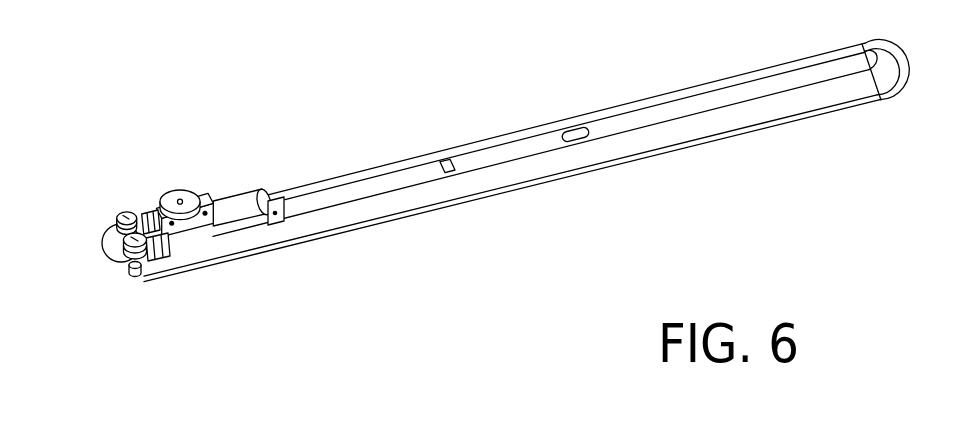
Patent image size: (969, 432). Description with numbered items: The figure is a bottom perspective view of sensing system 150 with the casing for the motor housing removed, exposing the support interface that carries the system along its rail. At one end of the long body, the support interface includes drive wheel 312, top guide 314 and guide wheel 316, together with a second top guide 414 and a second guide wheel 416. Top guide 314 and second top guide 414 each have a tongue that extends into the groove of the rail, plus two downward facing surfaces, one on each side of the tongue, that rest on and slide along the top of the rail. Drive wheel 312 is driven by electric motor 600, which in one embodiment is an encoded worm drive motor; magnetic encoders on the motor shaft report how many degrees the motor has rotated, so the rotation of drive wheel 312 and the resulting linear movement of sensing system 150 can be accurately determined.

The sensing system 150 is at (269, 292).
The drive wheel 312 is at (183, 190).
The top guide 314 is at (142, 210).
The guide wheel 316 is at (125, 217).
The second top guide 414 is at (157, 266).
The second guide wheel 416 is at (122, 268).
The electric motor 600 is at (247, 197).